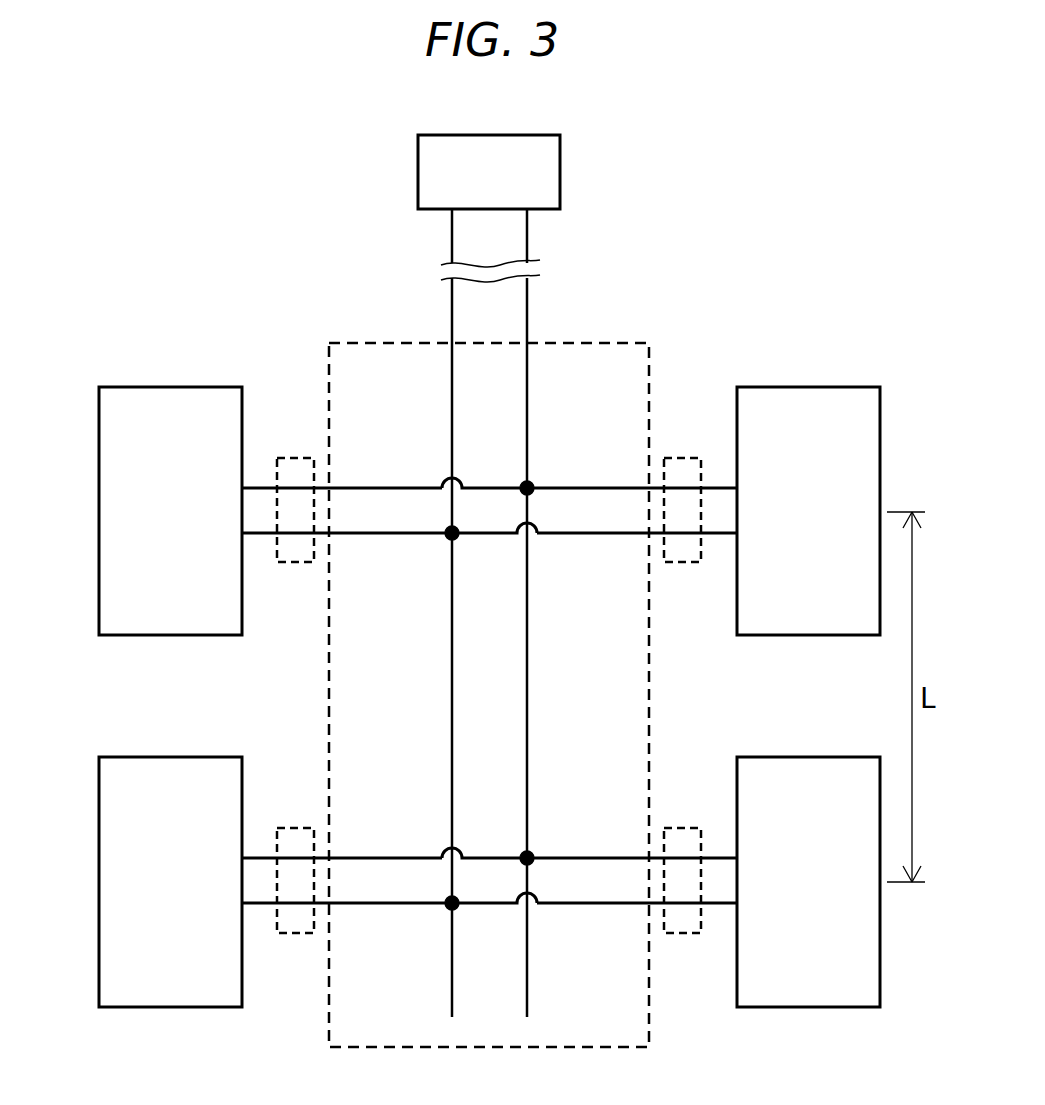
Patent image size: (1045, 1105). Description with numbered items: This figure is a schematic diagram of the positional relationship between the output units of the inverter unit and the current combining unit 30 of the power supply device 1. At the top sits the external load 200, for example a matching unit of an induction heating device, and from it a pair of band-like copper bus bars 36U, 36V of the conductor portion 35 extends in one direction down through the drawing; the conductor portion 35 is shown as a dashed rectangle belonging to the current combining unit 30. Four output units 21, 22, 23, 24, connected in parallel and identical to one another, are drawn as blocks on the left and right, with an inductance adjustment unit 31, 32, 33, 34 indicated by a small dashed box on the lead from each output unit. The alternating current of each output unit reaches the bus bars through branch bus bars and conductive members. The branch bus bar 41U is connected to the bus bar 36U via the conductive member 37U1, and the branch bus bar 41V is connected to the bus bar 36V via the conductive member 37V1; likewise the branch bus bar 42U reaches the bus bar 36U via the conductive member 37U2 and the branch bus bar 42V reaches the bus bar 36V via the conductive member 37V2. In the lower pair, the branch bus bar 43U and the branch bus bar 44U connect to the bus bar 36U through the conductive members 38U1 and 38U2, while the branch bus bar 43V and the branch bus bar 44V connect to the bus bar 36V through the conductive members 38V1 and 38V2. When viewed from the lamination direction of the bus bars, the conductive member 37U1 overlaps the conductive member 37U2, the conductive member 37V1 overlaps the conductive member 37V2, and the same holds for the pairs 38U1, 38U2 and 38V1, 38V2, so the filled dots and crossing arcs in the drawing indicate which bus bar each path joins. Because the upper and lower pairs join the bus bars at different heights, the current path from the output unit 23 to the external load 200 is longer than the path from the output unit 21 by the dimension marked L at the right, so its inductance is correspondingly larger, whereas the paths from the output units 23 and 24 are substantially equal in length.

The power supply device 1 is at (816, 160).
The external load 200 is at (560, 170).
The bus bar 36U is at (452, 305).
The bus bar 36V is at (527, 305).
The current combining unit 30 is at (756, 300).
The conductor portion 35 is at (603, 343).
The output unit 21 is at (99, 488).
The output unit 22 is at (880, 437).
The output unit 23 is at (99, 856).
The output unit 24 is at (880, 961).
The inductance adjustment unit 31 is at (290, 458).
The inductance adjustment unit 32 is at (690, 458).
The inductance adjustment unit 33 is at (290, 828).
The inductance adjustment unit 34 is at (690, 828).
The branch bus bar 41V is at (378, 488).
The branch bus bar 41U is at (378, 533).
The branch bus bar 42V is at (602, 488).
The branch bus bar 42U is at (602, 533).
The conductive member 37V1 is at (496, 488).
The conductive member 37V2 is at (567, 488).
The conductive member 37U1 is at (420, 533).
The conductive member 37U2 is at (496, 533).
The branch bus bar 43V is at (378, 858).
The branch bus bar 43U is at (378, 903).
The branch bus bar 44V is at (602, 858).
The branch bus bar 44U is at (602, 903).
The conductive member 38V1 is at (496, 858).
The conductive member 38V2 is at (567, 858).
The conductive member 38U1 is at (420, 903).
The conductive member 38U2 is at (496, 903).